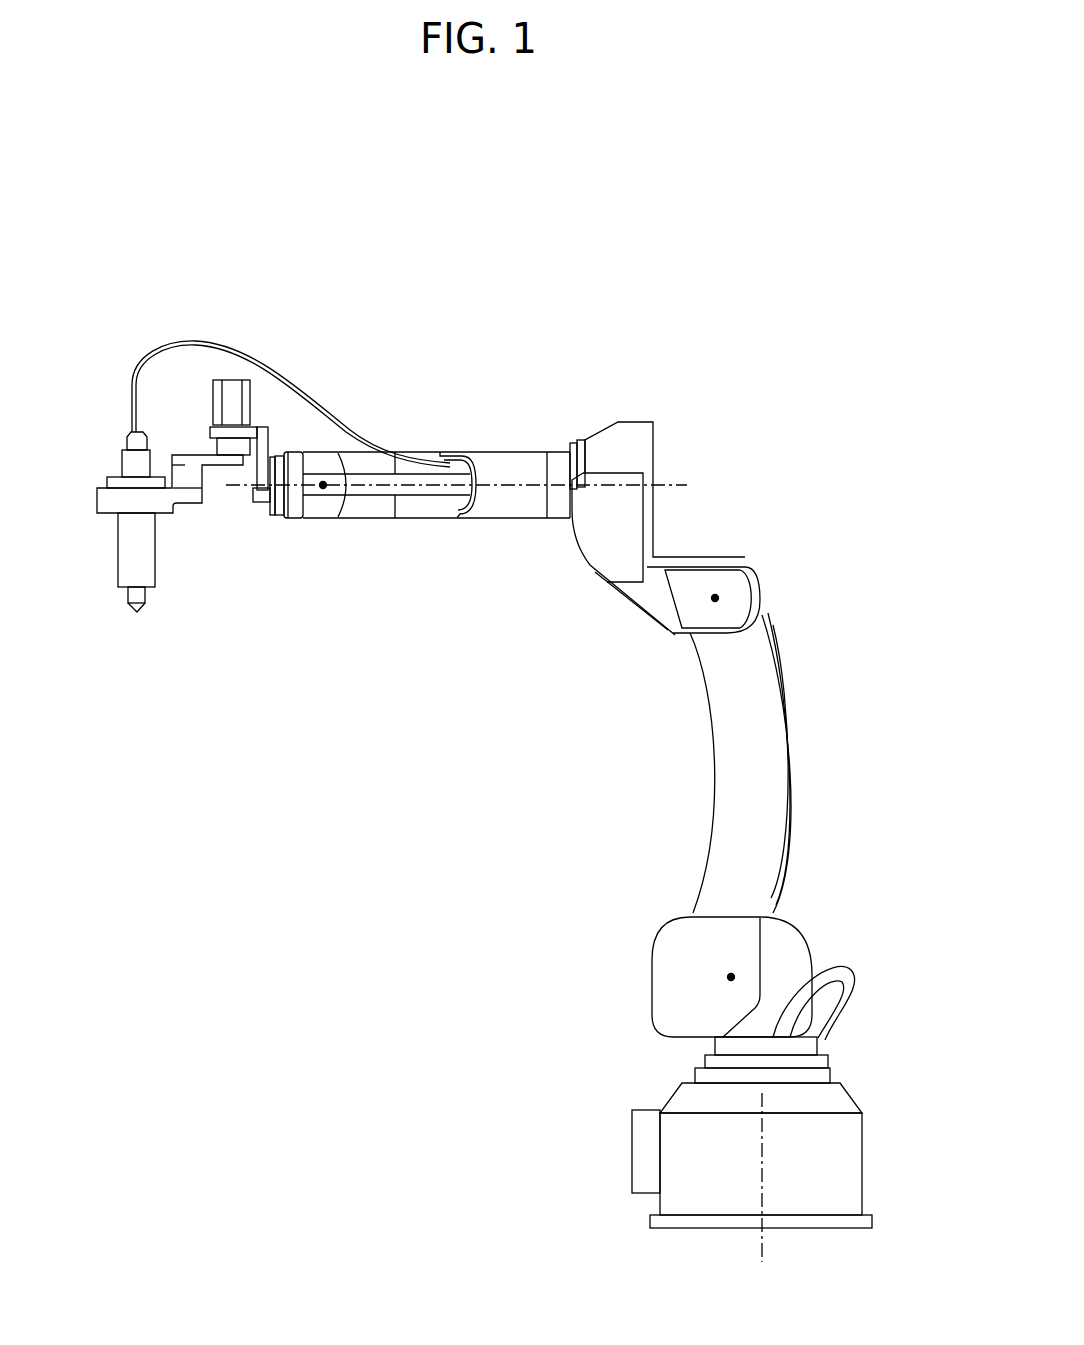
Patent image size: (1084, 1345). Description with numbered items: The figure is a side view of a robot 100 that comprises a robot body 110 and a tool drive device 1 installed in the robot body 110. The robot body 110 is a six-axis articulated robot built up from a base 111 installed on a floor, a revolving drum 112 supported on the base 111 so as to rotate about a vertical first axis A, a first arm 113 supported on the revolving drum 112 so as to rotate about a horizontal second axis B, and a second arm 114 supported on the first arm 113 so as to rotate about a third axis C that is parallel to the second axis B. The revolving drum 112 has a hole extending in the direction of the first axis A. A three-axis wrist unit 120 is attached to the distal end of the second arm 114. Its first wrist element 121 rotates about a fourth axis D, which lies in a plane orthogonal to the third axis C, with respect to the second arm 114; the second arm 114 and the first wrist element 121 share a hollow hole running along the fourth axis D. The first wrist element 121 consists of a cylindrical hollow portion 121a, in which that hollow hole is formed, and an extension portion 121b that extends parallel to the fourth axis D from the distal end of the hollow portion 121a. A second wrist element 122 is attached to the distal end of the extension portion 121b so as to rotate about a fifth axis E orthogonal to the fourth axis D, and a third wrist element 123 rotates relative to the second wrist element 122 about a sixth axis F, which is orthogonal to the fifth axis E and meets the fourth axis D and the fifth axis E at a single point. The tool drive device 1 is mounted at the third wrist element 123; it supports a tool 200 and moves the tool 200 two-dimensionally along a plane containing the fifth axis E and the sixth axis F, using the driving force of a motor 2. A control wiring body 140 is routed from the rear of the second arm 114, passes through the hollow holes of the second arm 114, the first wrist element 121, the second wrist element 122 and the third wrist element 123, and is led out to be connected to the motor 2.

The tool drive device 1 is at (156, 504).
The motor 2 is at (213, 397).
The robot 100 is at (765, 718).
The robot body 110 is at (765, 801).
The base 111 is at (796, 1177).
The revolving drum 112 is at (788, 1000).
The first arm 113 is at (694, 740).
The second arm 114 is at (625, 420).
The wrist unit 120 is at (351, 492).
The first wrist element 121 is at (436, 474).
The hollow portion 121a is at (512, 452).
The extension portion 121b is at (377, 518).
The second wrist element 122 is at (318, 510).
The third wrist element 123 is at (272, 508).
The control wiring body 140 is at (377, 483).
The tool 200 is at (108, 570).
The first axis A is at (762, 1248).
The second axis B is at (722, 976).
The third axis C is at (727, 599).
The fourth axis D is at (535, 487).
The fifth axis E is at (326, 482).
The sixth axis F is at (238, 487).